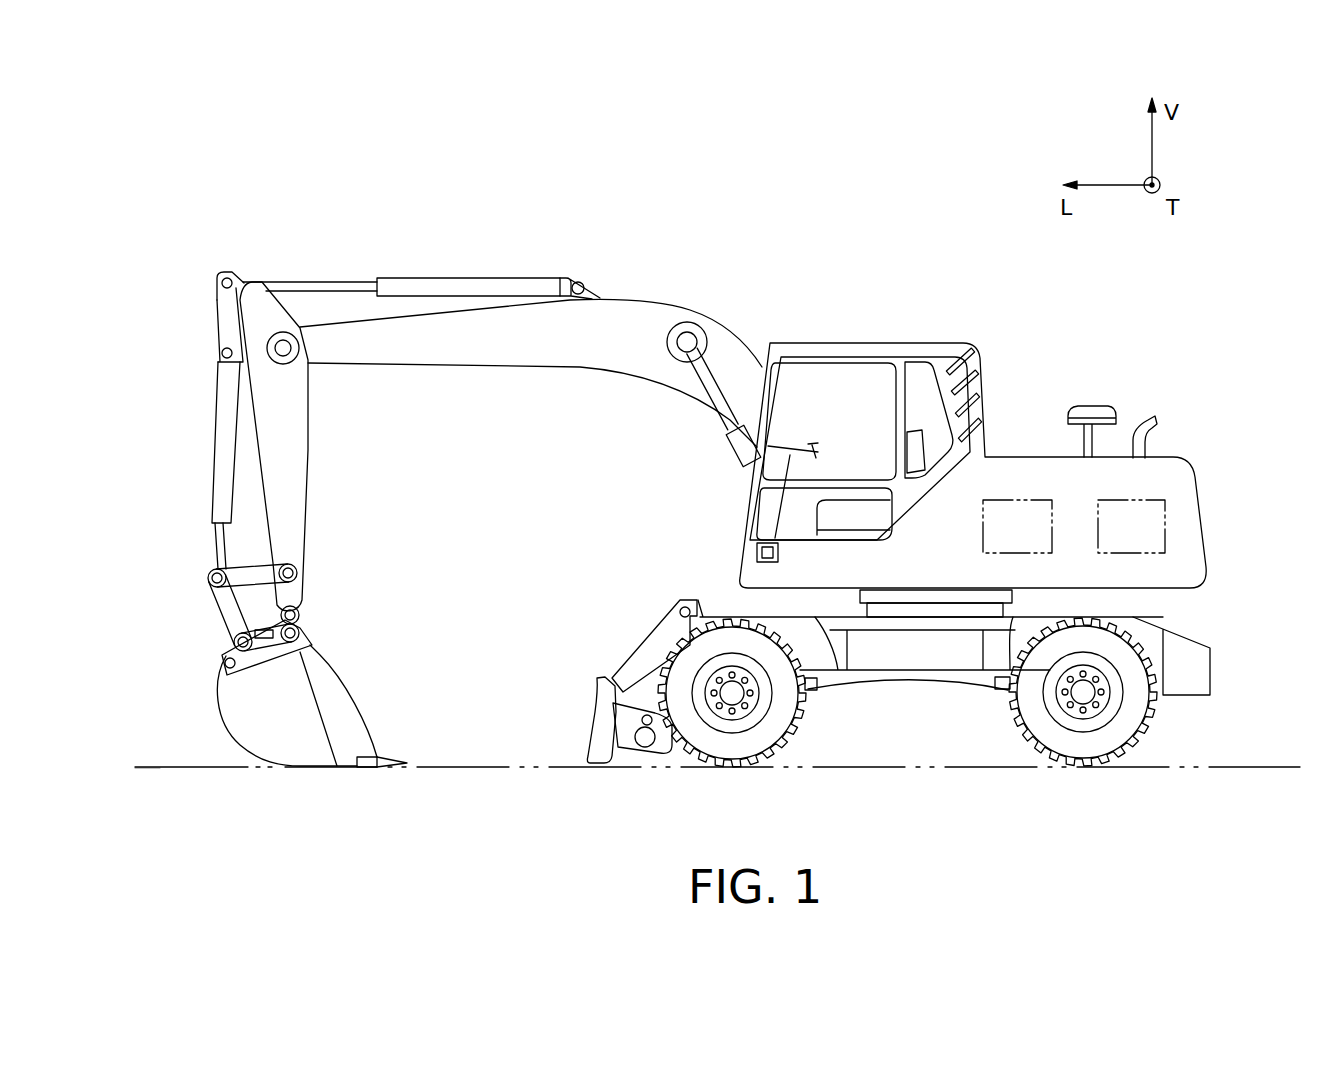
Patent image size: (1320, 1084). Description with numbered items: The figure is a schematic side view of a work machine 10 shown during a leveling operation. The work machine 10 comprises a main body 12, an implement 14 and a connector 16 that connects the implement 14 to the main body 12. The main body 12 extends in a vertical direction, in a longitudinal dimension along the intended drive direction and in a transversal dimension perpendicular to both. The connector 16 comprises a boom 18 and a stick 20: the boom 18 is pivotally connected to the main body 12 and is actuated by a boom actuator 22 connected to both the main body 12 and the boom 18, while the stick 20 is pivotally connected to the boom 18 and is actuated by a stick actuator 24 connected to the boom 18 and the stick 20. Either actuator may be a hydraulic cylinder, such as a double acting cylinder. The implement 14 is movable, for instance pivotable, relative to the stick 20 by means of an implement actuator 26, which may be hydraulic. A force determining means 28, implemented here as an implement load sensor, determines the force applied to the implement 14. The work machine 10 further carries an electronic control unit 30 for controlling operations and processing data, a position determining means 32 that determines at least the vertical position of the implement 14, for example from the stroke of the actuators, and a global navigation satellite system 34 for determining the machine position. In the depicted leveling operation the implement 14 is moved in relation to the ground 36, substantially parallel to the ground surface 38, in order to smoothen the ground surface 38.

The work machine 10 is at (918, 234).
The main body 12 is at (1196, 324).
The implement 14 is at (218, 750).
The connector 16 is at (197, 168).
The boom 18 is at (466, 228).
The stick 20 is at (175, 402).
The boom actuator 22 is at (717, 397).
The stick actuator 24 is at (220, 492).
The implement actuator 26 is at (200, 664).
The force determining means 28 is at (262, 618).
The electronic control unit 30 is at (1152, 500).
The position determining means 32 is at (1038, 500).
The global navigation satellite system 34 is at (1103, 407).
The ground 36 is at (263, 790).
The ground surface 38 is at (203, 770).